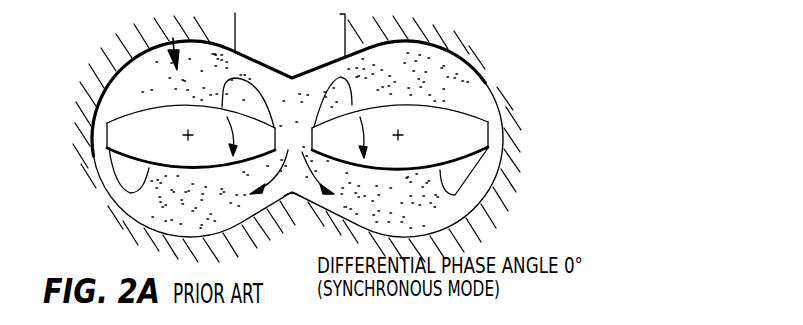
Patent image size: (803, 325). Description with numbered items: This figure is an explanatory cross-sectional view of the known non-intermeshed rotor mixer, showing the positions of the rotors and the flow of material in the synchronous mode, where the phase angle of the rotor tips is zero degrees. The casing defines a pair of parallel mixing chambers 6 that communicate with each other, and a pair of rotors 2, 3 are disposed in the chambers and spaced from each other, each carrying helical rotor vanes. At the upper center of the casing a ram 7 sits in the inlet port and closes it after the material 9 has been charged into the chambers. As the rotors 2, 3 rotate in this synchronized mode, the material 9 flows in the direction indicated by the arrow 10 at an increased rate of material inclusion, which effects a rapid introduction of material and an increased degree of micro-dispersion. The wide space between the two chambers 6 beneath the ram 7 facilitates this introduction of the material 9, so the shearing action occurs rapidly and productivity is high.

The rotor 2 is at (442, 116).
The rotor 3 is at (151, 114).
The mixing chamber 6 is at (455, 52).
The ram 7 is at (333, 36).
The material 9 is at (173, 38).
The arrow 10 is at (290, 188).